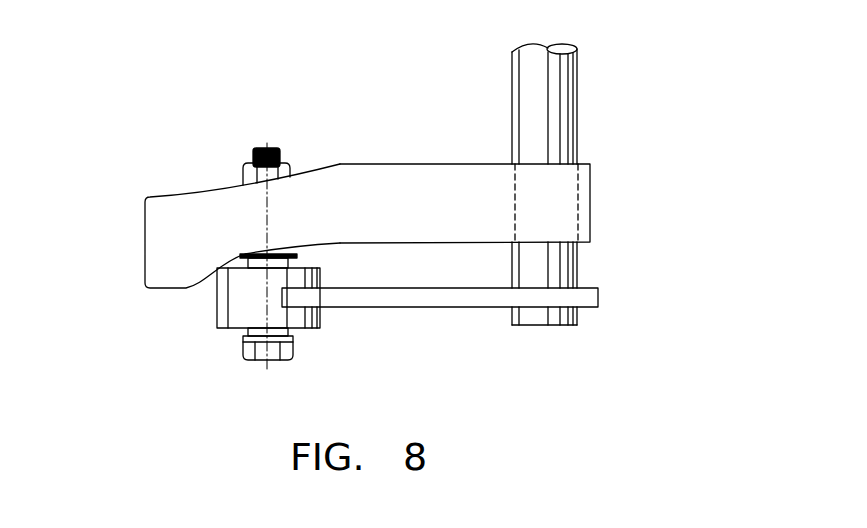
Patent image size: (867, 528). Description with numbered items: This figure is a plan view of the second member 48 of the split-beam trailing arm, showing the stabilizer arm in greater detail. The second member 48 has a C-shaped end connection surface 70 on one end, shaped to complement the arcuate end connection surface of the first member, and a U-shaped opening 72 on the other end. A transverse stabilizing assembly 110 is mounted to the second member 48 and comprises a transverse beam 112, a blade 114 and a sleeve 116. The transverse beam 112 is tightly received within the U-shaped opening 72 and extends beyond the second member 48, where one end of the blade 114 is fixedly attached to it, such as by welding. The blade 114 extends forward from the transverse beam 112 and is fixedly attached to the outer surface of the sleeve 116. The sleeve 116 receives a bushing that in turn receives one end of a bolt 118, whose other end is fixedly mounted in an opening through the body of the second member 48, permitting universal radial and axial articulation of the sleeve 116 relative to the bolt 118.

The second member 48 is at (458, 163).
The C-shaped end connection surface 70 is at (145, 253).
The U-shaped opening 72 is at (627, 220).
The transverse stabilizing assembly 110 is at (672, 326).
The transverse beam 112 is at (577, 92).
The blade 114 is at (382, 308).
The sleeve 116 is at (217, 309).
The bolt 118 is at (243, 350).